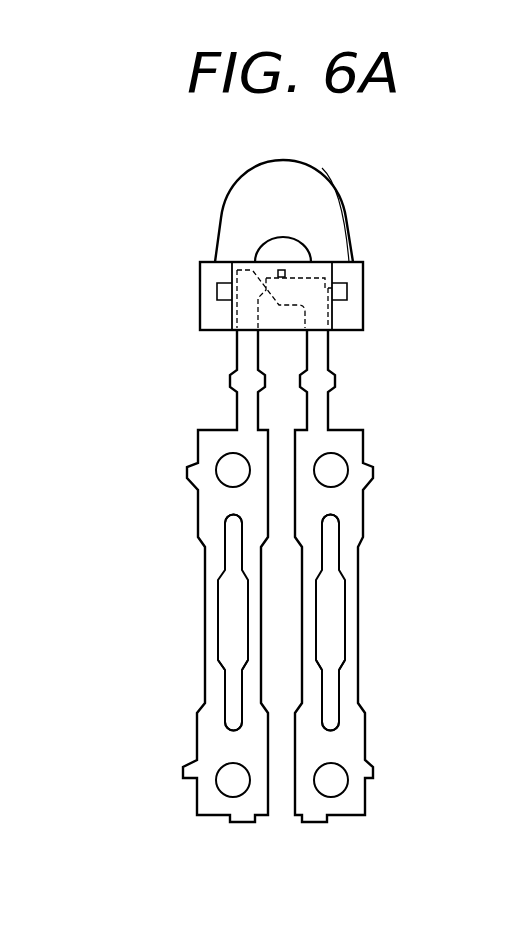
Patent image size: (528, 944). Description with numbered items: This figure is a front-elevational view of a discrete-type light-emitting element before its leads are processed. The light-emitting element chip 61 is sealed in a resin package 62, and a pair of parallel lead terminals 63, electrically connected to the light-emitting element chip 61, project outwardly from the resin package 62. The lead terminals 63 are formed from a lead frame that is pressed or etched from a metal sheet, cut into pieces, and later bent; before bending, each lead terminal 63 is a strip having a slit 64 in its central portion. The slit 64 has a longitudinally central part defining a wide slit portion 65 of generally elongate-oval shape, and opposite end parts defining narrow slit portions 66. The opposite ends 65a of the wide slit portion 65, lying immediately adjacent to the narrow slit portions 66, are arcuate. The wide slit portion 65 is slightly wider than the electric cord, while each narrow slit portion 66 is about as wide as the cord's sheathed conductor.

The light-emitting element chip 61 is at (283, 270).
The resin package 62 is at (330, 250).
The lead terminal 63 is at (195, 467).
The slit 64 is at (222, 632).
The wide slit portion 65 is at (230, 612).
The opposite ends of the wide slit portion 65a is at (222, 668).
The narrow slit portion 66 is at (332, 527).